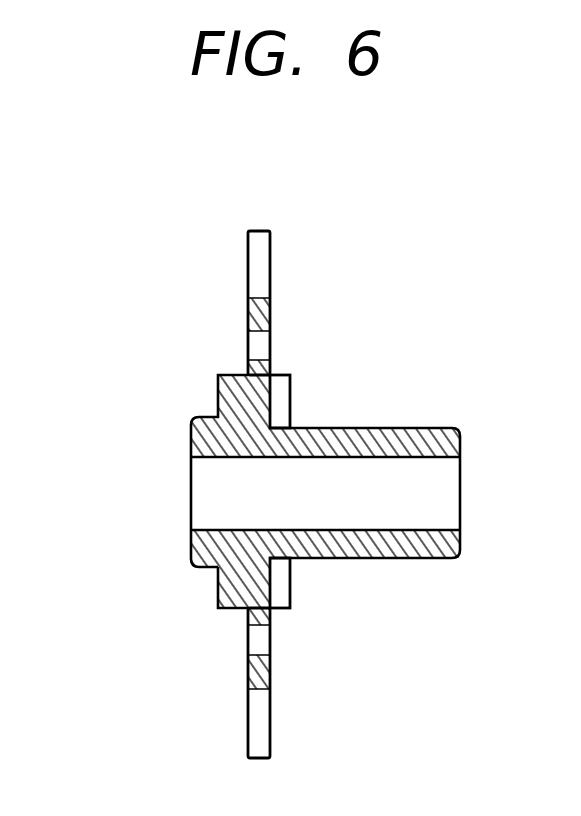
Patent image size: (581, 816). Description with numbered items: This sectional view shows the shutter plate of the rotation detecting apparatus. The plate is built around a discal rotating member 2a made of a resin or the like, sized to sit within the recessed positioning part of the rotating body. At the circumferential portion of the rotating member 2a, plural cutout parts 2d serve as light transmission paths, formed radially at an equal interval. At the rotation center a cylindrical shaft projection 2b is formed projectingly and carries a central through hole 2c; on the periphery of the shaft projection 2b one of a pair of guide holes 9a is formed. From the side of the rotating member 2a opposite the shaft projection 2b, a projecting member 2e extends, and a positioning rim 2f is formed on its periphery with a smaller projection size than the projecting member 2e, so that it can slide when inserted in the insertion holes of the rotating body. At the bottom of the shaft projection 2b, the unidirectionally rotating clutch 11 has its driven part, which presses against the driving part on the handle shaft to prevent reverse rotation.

The rotating member 2a is at (323, 494).
The shaft projection 2b is at (383, 560).
The through hole 2c is at (398, 458).
The cutout parts 2d is at (260, 268).
The projecting member 2e is at (197, 552).
The positioning rim 2f is at (218, 588).
The guide hole 9a is at (260, 344).
The unidirectionally rotating clutch 11 is at (290, 585).